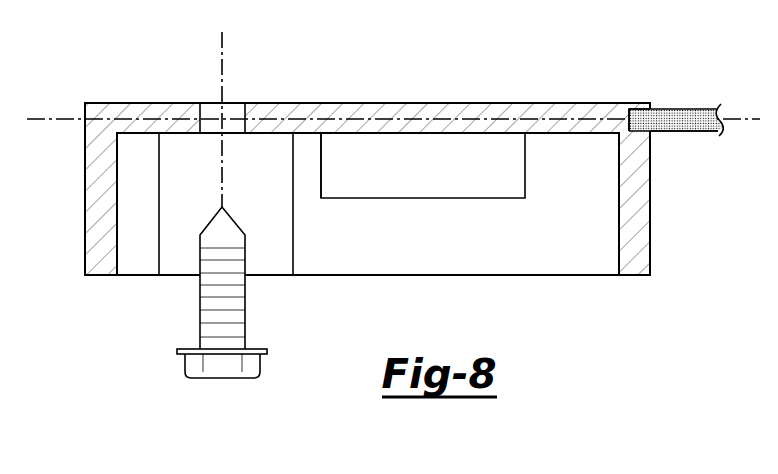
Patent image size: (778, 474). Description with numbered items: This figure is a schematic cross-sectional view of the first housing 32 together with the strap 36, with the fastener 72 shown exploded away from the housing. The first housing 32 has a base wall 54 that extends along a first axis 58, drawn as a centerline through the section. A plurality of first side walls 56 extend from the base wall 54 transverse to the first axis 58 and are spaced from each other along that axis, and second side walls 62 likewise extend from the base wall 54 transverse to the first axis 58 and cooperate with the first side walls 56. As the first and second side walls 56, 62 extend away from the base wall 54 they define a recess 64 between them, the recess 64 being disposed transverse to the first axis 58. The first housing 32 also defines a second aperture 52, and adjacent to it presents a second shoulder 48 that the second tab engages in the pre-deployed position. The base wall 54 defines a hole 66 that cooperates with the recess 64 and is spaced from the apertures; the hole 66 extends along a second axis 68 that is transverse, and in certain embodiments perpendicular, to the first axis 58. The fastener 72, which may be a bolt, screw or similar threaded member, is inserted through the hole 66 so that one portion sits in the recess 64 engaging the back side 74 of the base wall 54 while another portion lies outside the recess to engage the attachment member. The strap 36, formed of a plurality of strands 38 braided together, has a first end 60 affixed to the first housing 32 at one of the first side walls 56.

The first housing 32 is at (571, 113).
The strap 36 is at (690, 109).
The strands 38 is at (678, 131).
The second shoulder 48 is at (393, 198).
The second aperture 52 is at (322, 150).
The base wall 54 is at (508, 103).
The first side walls 56 is at (90, 228).
The first axis 58 is at (45, 117).
The first end 60 is at (637, 111).
The second side walls 62 is at (560, 276).
The recess 64 is at (336, 250).
The hole 66 is at (233, 112).
The second axis 68 is at (222, 47).
The fastener 72 is at (222, 364).
The back side 74 is at (134, 135).